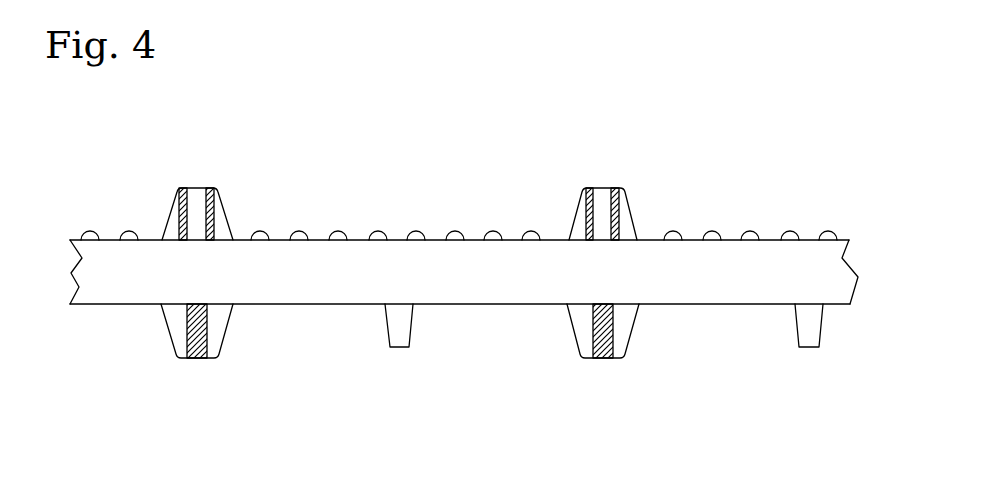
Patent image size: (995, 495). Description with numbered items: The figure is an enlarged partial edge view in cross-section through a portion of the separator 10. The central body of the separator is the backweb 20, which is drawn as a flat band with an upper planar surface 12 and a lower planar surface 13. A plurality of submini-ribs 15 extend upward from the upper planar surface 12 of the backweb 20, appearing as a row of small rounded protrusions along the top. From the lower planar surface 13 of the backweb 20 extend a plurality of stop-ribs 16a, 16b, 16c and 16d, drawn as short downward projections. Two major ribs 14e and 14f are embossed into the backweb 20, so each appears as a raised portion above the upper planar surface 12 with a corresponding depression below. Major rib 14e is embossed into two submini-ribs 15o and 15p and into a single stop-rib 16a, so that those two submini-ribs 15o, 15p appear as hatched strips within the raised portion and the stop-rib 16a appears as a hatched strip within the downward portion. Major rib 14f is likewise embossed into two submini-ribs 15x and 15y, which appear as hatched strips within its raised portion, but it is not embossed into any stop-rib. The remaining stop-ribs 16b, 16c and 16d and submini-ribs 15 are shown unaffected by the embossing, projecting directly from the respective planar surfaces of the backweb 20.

The separator 10 is at (768, 102).
The upper planar surface 12 is at (360, 240).
The lower planar surface 13 is at (720, 304).
The major rib 14e is at (219, 210).
The major rib 14f is at (624, 210).
The submini-ribs 15 is at (531, 231).
The submini-rib 15o is at (183, 188).
The submini-rib 15p is at (211, 188).
The submini-rib 15x is at (590, 188).
The submini-rib 15y is at (616, 188).
The stop-rib 16a is at (194, 358).
The stop-rib 16b is at (398, 347).
The stop-rib 16c is at (598, 358).
The lower projection 16d is at (808, 347).
The backweb 20 is at (832, 285).